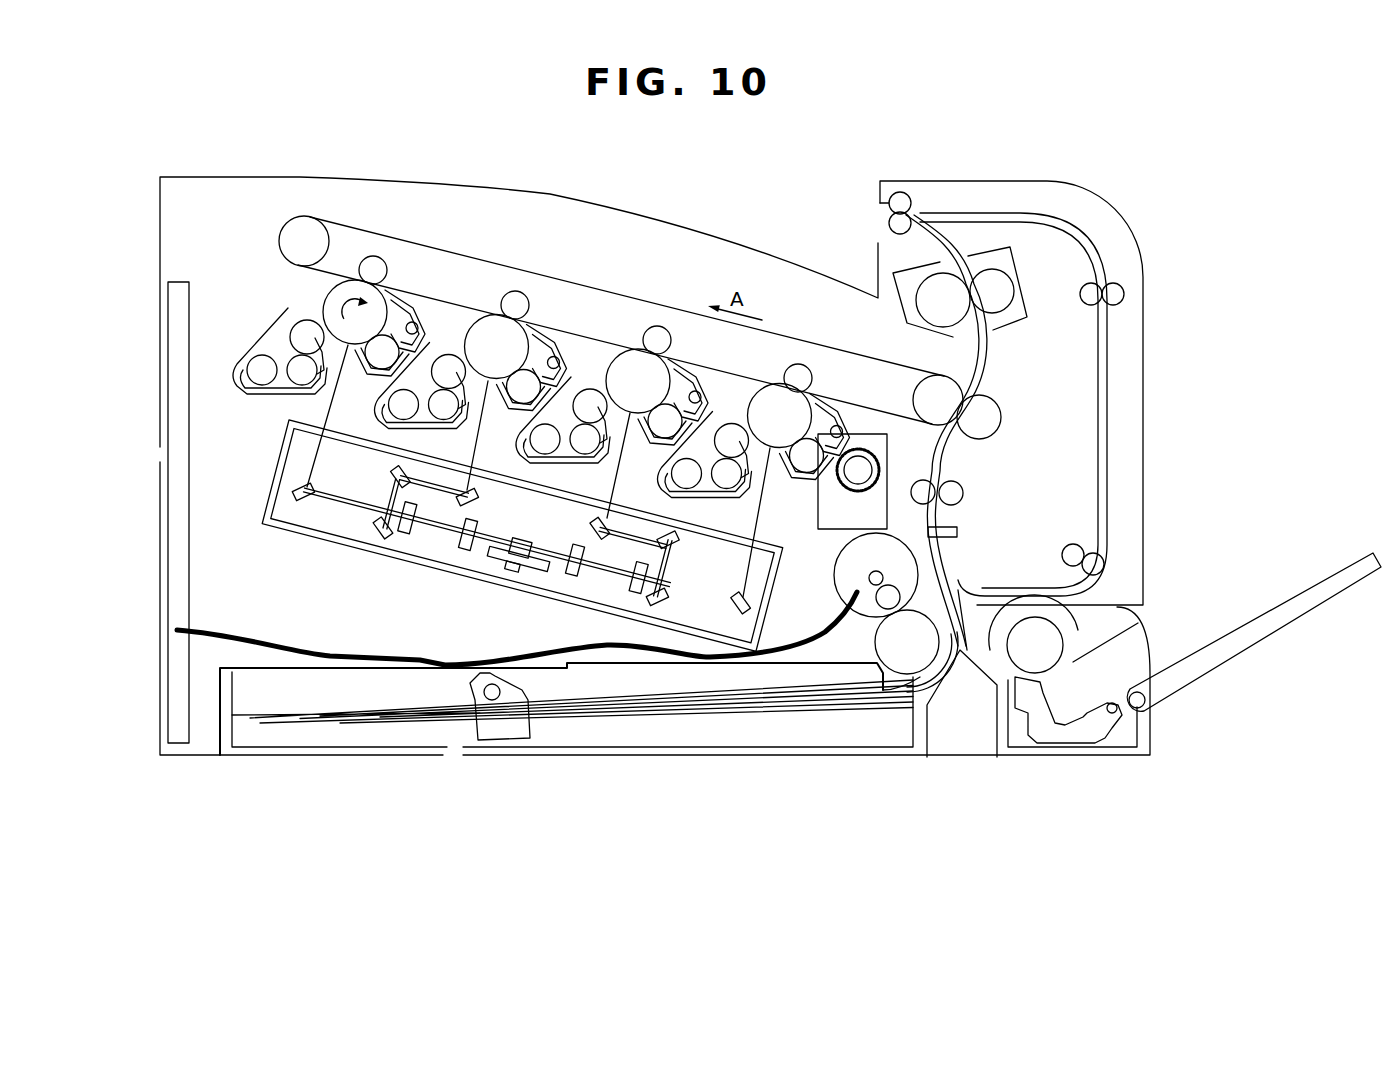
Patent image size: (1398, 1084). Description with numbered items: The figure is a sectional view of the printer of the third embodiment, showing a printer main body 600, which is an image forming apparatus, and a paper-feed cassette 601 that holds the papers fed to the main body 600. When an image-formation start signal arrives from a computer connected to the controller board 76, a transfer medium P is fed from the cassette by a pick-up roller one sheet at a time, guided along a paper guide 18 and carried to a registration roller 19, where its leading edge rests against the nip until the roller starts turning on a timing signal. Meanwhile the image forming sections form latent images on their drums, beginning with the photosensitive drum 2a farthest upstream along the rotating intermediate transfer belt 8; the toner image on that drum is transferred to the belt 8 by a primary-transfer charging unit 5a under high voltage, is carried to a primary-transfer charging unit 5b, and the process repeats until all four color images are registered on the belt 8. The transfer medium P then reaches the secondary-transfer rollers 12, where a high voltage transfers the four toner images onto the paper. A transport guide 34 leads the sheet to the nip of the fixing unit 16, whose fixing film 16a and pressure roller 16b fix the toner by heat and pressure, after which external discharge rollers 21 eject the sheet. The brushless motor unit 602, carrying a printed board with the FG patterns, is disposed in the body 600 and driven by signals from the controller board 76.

The printer main body 600 is at (136, 228).
The paper-feed cassette 601 is at (142, 695).
The brushless motor unit 602 is at (877, 452).
The photosensitive drum 2a is at (313, 300).
The primary-transfer charging unit 5a is at (387, 273).
The primary-transfer charging unit 5b is at (530, 305).
The intermediate transfer belt 8 is at (540, 272).
The secondary-transfer rollers 12 is at (1003, 417).
The fixing unit 16 is at (1030, 260).
The fixing film 16a is at (915, 303).
The pressure roller 16b is at (1013, 305).
The paper guide 18 is at (968, 593).
The registration roller 19 is at (965, 493).
The external discharge rollers 21 is at (889, 203).
The transport guide 34 is at (986, 370).
The controller board 76 is at (189, 573).
The transfer medium P is at (598, 718).